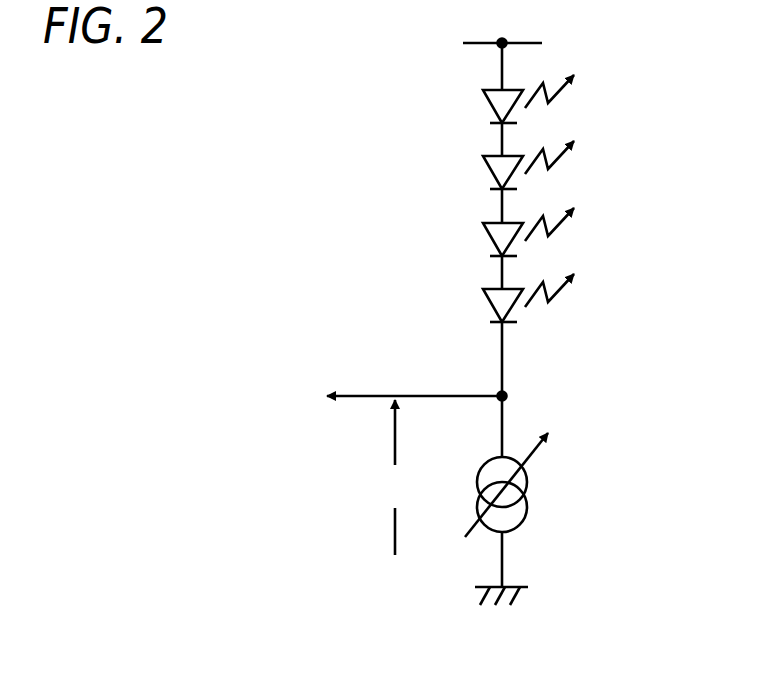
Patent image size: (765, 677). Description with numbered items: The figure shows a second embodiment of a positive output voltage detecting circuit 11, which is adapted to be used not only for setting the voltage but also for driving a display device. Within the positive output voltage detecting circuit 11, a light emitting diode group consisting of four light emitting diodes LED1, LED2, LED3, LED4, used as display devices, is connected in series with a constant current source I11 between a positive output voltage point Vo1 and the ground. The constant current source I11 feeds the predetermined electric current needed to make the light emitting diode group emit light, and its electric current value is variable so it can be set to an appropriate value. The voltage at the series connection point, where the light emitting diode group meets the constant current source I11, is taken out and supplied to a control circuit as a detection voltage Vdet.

The positive output voltage detecting circuit 11 is at (292, 48).
The constant current source I11 is at (535, 515).
The light emitting diode LED1 is at (473, 101).
The light emitting diode LED2 is at (472, 175).
The light emitting diode LED3 is at (472, 239).
The light emitting diode LED4 is at (472, 304).
The positive output voltage point Vo1 is at (538, 27).
The detection voltage Vdet is at (395, 477).